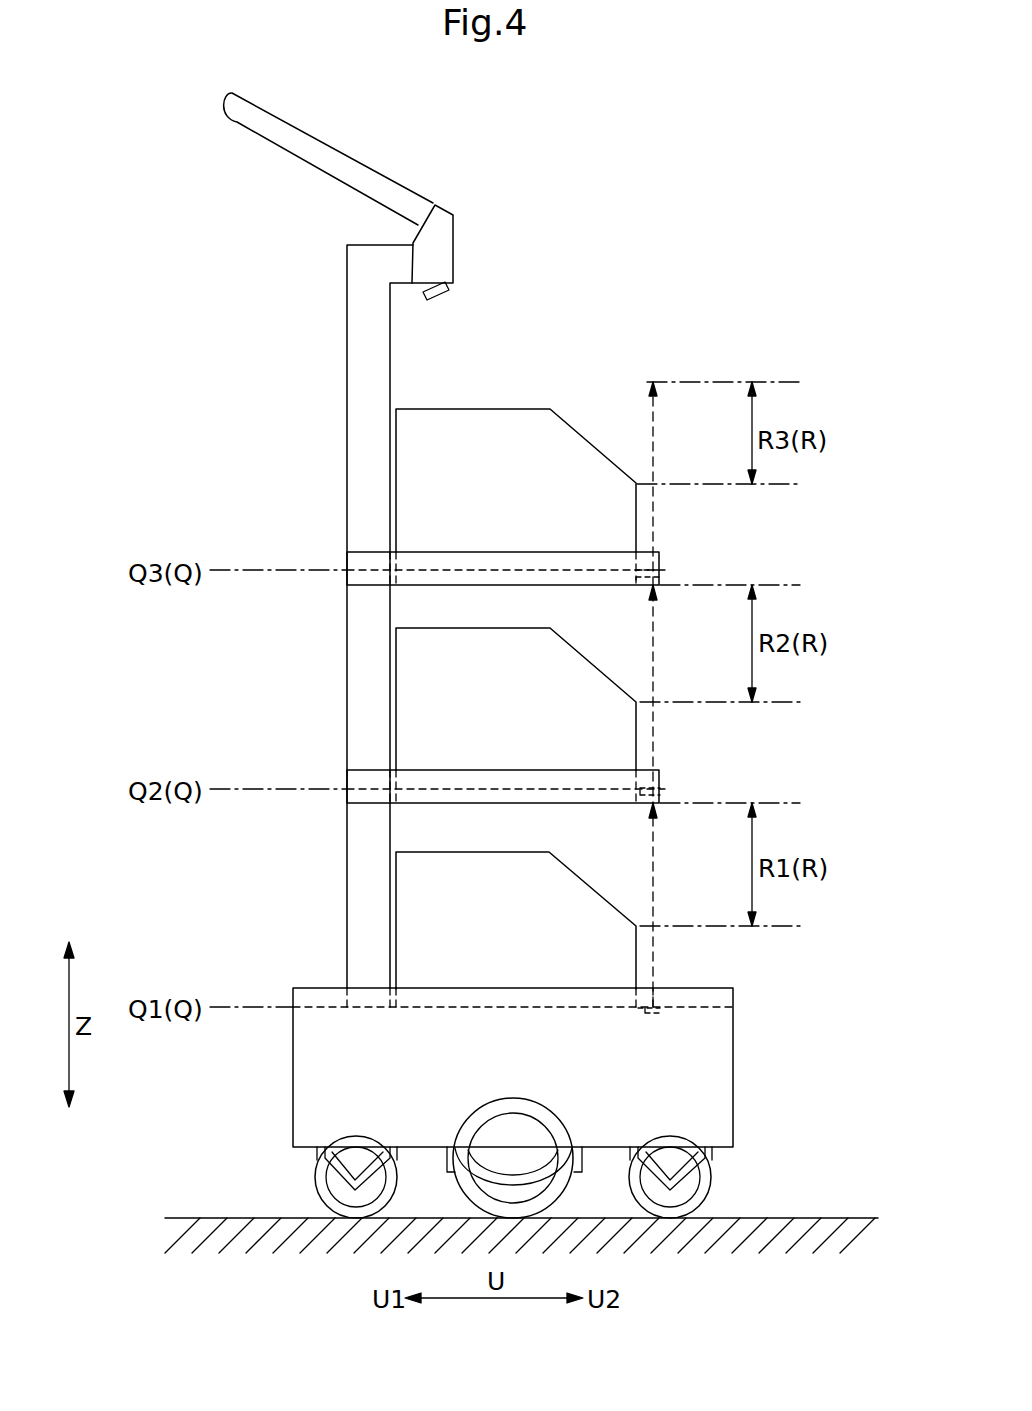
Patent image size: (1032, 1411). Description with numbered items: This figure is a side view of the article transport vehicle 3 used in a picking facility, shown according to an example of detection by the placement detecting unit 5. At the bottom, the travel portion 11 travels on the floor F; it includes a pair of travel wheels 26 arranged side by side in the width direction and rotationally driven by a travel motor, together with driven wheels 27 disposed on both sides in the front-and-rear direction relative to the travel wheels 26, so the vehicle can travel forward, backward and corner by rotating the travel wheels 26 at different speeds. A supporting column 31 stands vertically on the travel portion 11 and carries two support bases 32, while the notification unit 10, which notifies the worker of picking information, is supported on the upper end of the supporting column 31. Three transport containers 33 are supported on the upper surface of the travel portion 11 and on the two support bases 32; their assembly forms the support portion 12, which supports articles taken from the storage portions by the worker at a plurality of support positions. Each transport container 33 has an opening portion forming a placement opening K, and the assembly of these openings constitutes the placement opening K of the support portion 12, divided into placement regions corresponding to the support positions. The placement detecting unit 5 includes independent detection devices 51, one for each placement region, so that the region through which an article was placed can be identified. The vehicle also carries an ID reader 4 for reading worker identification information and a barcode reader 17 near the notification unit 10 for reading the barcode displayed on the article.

The article transport vehicle 3 is at (505, 135).
The notification unit 10 is at (308, 136).
The travel portion 11 is at (735, 1045).
The support portion 12 is at (617, 357).
The barcode reader 17 is at (447, 297).
The travel wheels 26 is at (553, 1203).
The driven wheels 27 is at (317, 1188).
The supporting column 31 is at (355, 328).
The support bases 32 is at (445, 560).
The transport container 33 is at (533, 408).
The ID reader 4 is at (617, 570).
The detection devices 51 is at (663, 573).
The placement detecting unit 5 is at (711, 805).
The placement opening K is at (595, 432).
The floor F is at (808, 1218).